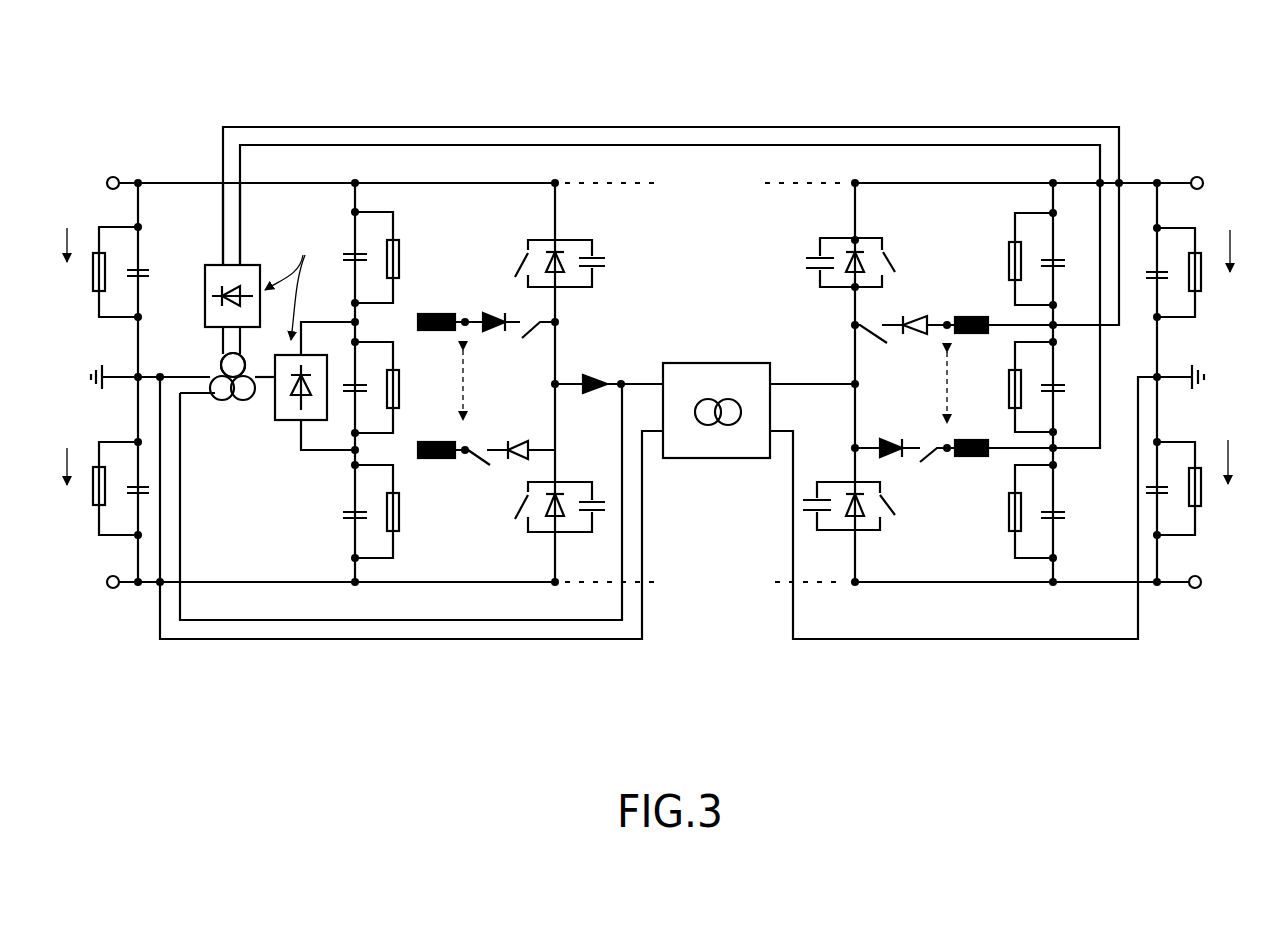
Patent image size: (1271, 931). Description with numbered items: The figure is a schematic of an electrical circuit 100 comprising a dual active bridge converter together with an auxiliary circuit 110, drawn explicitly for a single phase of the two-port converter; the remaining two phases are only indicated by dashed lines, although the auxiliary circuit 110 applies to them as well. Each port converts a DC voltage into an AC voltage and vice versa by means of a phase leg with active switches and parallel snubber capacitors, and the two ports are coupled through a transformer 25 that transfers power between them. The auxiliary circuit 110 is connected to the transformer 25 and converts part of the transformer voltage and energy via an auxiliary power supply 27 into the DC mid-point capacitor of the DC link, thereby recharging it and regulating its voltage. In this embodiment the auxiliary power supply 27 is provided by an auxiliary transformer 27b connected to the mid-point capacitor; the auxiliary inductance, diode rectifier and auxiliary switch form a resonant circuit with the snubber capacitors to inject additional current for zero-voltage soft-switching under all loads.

The electrical circuit 100 is at (146, 114).
The auxiliary circuit 110 is at (776, 123).
The transformer 25 is at (706, 360).
The auxiliary voltage source 27 is at (233, 412).
The auxiliary transformer 27b is at (232, 437).